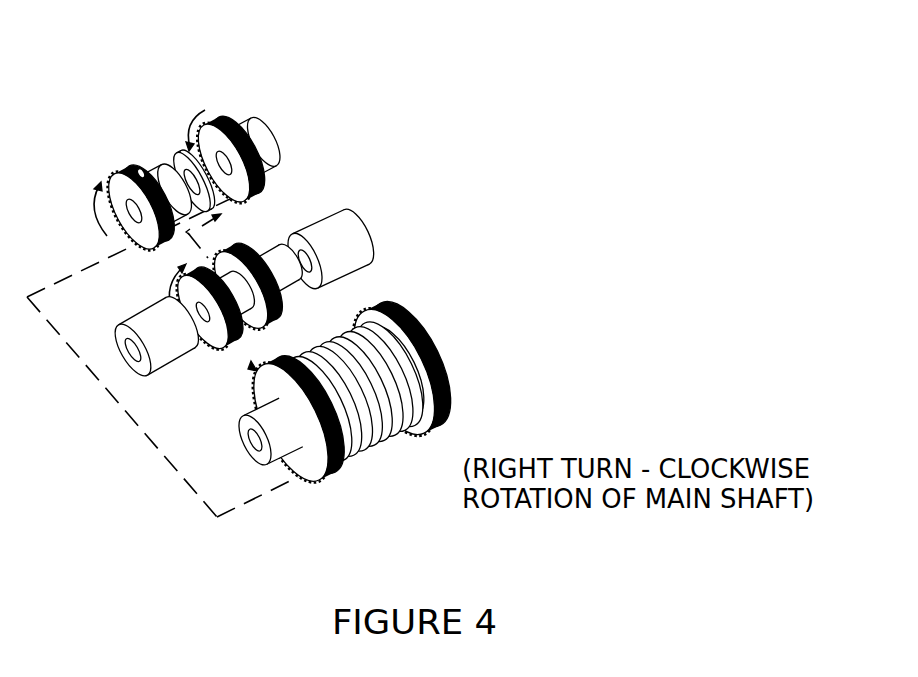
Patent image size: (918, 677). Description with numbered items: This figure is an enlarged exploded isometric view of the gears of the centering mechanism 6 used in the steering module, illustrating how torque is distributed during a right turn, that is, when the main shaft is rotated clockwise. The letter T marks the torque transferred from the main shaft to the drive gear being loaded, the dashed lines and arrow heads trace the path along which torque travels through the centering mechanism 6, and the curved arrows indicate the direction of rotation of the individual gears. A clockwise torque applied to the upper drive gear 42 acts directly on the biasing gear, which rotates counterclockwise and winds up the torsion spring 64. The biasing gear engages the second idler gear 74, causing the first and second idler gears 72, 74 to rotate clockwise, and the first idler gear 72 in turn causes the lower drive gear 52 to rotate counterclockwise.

The centering mechanism 6 is at (428, 201).
The upper drive gear 42 is at (129, 171).
The lower drive gear 52 is at (228, 122).
The torsion spring 64 is at (382, 378).
The first idler gear 72 is at (284, 318).
The second idler gear 74 is at (213, 342).